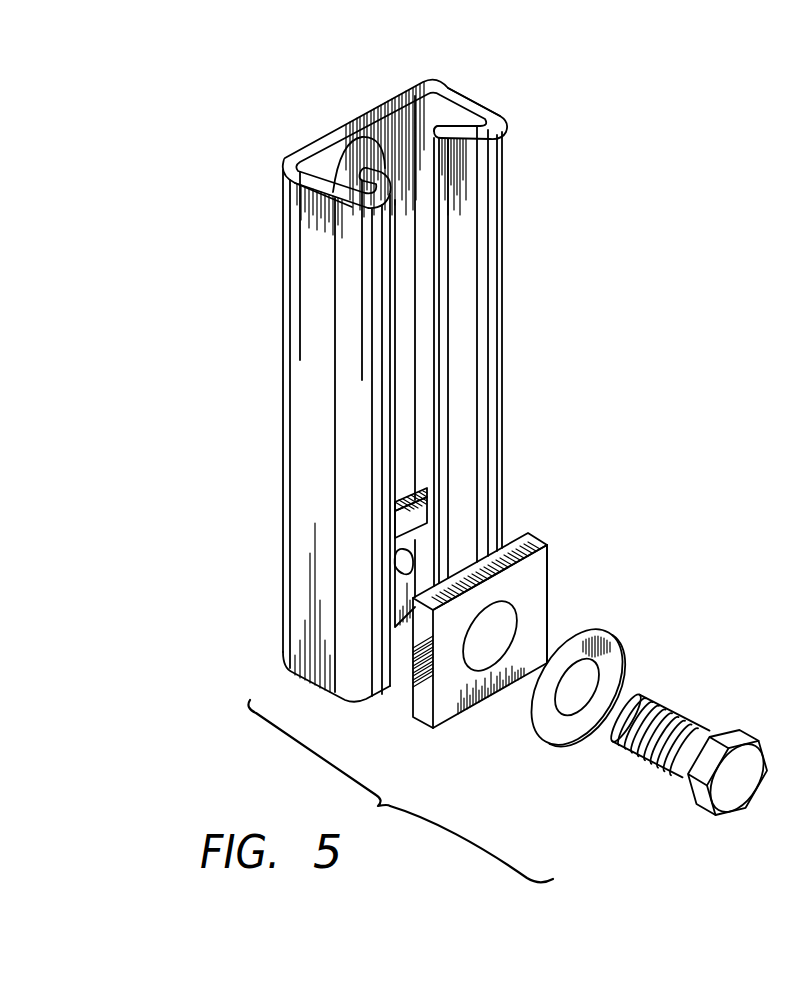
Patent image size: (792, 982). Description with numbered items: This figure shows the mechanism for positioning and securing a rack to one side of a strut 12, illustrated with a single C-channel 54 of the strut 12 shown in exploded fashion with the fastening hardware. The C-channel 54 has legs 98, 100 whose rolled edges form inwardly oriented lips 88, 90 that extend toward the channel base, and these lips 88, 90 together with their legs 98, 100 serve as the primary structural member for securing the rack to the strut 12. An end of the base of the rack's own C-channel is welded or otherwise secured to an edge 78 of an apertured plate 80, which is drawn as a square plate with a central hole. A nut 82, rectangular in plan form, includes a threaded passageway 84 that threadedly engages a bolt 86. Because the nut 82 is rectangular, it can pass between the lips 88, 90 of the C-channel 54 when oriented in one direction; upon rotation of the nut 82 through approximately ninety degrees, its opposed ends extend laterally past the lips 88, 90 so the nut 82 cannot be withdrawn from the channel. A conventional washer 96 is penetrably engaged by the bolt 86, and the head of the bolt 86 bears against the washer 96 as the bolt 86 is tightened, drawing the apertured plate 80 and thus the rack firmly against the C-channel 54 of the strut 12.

The strut 12 is at (238, 295).
The C-channel 54 is at (503, 210).
The edge 78 is at (528, 538).
The apertured plate 80 is at (548, 582).
The nut 82 is at (424, 497).
The threaded passageway 84 is at (413, 573).
The bolt 86 is at (666, 708).
The lip 88 is at (364, 152).
The lip 90 is at (441, 123).
The washer 96 is at (614, 663).
The leg 98 is at (308, 177).
The leg 100 is at (467, 97).